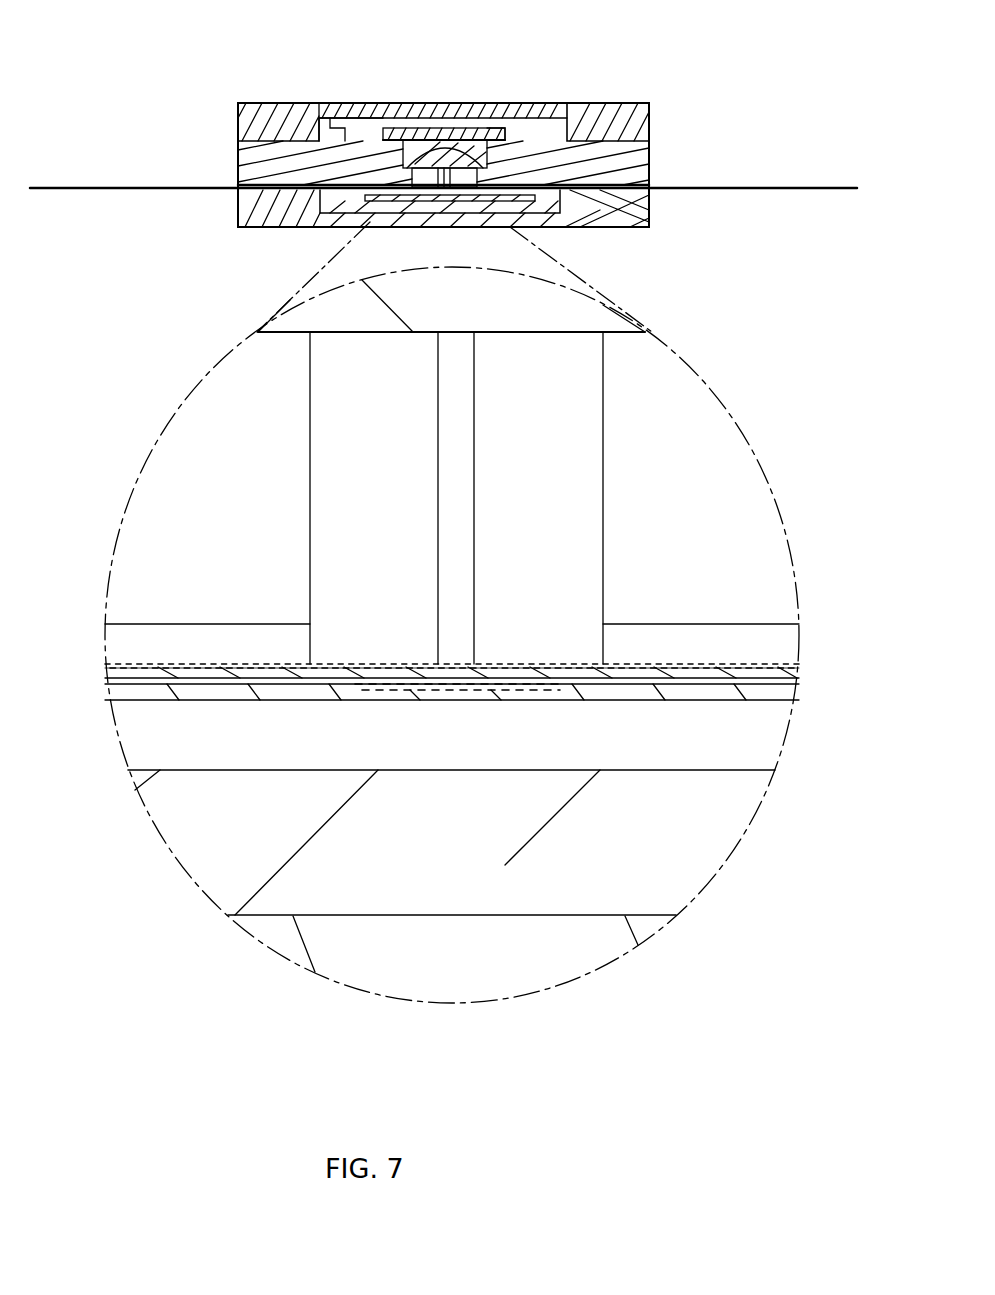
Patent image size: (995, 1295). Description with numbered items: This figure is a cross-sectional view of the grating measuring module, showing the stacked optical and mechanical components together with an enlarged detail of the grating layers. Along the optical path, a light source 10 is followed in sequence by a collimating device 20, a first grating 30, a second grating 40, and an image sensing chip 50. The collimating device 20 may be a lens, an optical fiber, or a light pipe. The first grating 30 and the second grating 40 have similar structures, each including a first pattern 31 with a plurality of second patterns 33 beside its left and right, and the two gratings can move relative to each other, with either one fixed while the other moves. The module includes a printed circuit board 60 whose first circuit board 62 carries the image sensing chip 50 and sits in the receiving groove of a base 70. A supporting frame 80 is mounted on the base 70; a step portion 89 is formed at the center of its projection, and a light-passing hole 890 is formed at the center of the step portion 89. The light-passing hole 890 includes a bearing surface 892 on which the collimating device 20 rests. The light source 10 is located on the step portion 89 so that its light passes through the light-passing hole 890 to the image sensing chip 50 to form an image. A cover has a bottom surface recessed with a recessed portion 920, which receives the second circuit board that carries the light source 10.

The light source 10 is at (428, 107).
The collimating device 20 is at (575, 140).
The first grating 30 is at (748, 188).
The first pattern 31 is at (455, 663).
The second patterns 33 is at (540, 665).
The second grating 40 is at (712, 697).
The image sensing chip 50 is at (570, 205).
The printed circuit board 60 is at (360, 107).
The first circuit board 62 is at (538, 207).
The base 70 is at (250, 206).
The supporting frame 80 is at (637, 160).
The step portion 89 is at (385, 107).
The light-passing hole 890 is at (484, 134).
The bearing surface 892 is at (400, 107).
The recessed portion 920 is at (340, 120).